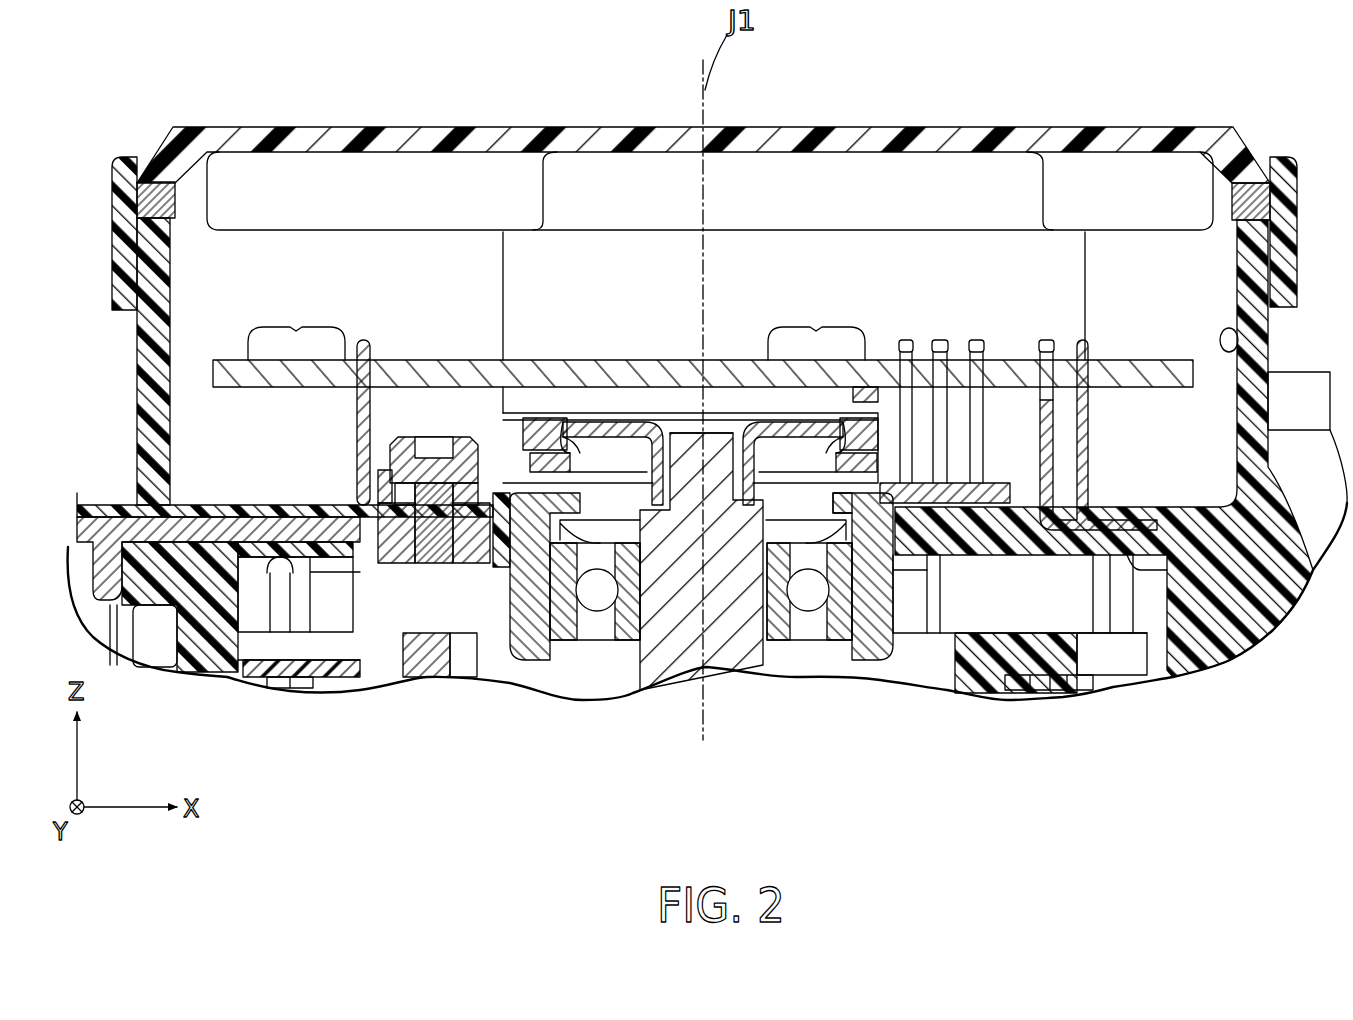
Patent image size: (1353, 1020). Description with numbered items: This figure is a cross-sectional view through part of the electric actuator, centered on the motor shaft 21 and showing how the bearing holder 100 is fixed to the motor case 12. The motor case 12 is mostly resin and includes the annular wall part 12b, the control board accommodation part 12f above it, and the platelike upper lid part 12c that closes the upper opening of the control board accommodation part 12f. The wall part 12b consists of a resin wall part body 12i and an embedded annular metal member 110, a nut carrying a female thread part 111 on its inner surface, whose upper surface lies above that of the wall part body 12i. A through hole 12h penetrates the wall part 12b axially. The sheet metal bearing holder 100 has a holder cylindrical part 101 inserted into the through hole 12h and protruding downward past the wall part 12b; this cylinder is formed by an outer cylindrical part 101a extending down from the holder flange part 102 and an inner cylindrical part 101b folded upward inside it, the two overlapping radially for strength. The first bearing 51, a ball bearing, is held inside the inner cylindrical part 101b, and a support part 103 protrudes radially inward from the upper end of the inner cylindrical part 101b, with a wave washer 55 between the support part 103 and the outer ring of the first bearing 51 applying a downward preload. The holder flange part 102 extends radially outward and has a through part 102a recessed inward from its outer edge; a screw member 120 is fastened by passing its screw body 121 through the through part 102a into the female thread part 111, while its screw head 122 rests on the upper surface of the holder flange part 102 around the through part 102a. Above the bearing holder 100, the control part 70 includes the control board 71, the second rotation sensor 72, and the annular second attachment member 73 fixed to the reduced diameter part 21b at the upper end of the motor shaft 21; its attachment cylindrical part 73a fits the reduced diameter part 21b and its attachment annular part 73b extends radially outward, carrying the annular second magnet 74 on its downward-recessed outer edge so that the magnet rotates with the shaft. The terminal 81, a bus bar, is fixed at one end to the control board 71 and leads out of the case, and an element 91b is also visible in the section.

The motor case 12 is at (1232, 660).
The wall part 12b is at (1037, 560).
The upper lid part 12c is at (1027, 140).
The control board accommodation part 12f is at (1237, 343).
The through hole 12h is at (508, 627).
The wall part body 12i is at (980, 547).
The motor shaft 21 is at (730, 667).
The reduced diameter part 21b is at (720, 470).
The first bearing 51 is at (808, 600).
The wave washer 55 is at (817, 533).
The control part 70 is at (1140, 355).
The control board 71 is at (815, 358).
The second rotation sensor 72 is at (868, 393).
The second attachment member 73 is at (703, 259).
The attachment cylindrical part 73a is at (660, 477).
The attachment annular part 73b is at (596, 430).
The second magnet 74 is at (540, 430).
The terminal 81 is at (1088, 368).
The support post 91b is at (363, 337).
The bearing holder 100 is at (895, 658).
The holder cylindrical part 101 is at (698, 678).
The outer cylindrical part 101a is at (545, 596).
The inner cylindrical part 101b is at (714, 654).
The holder flange part 102 is at (953, 488).
The through part 102a is at (418, 455).
The support part 103 is at (843, 507).
The metal member 110 is at (390, 543).
The female thread part 111 is at (423, 557).
The screw member 120 is at (473, 433).
The screw body 121 is at (437, 548).
The screw head 122 is at (393, 463).